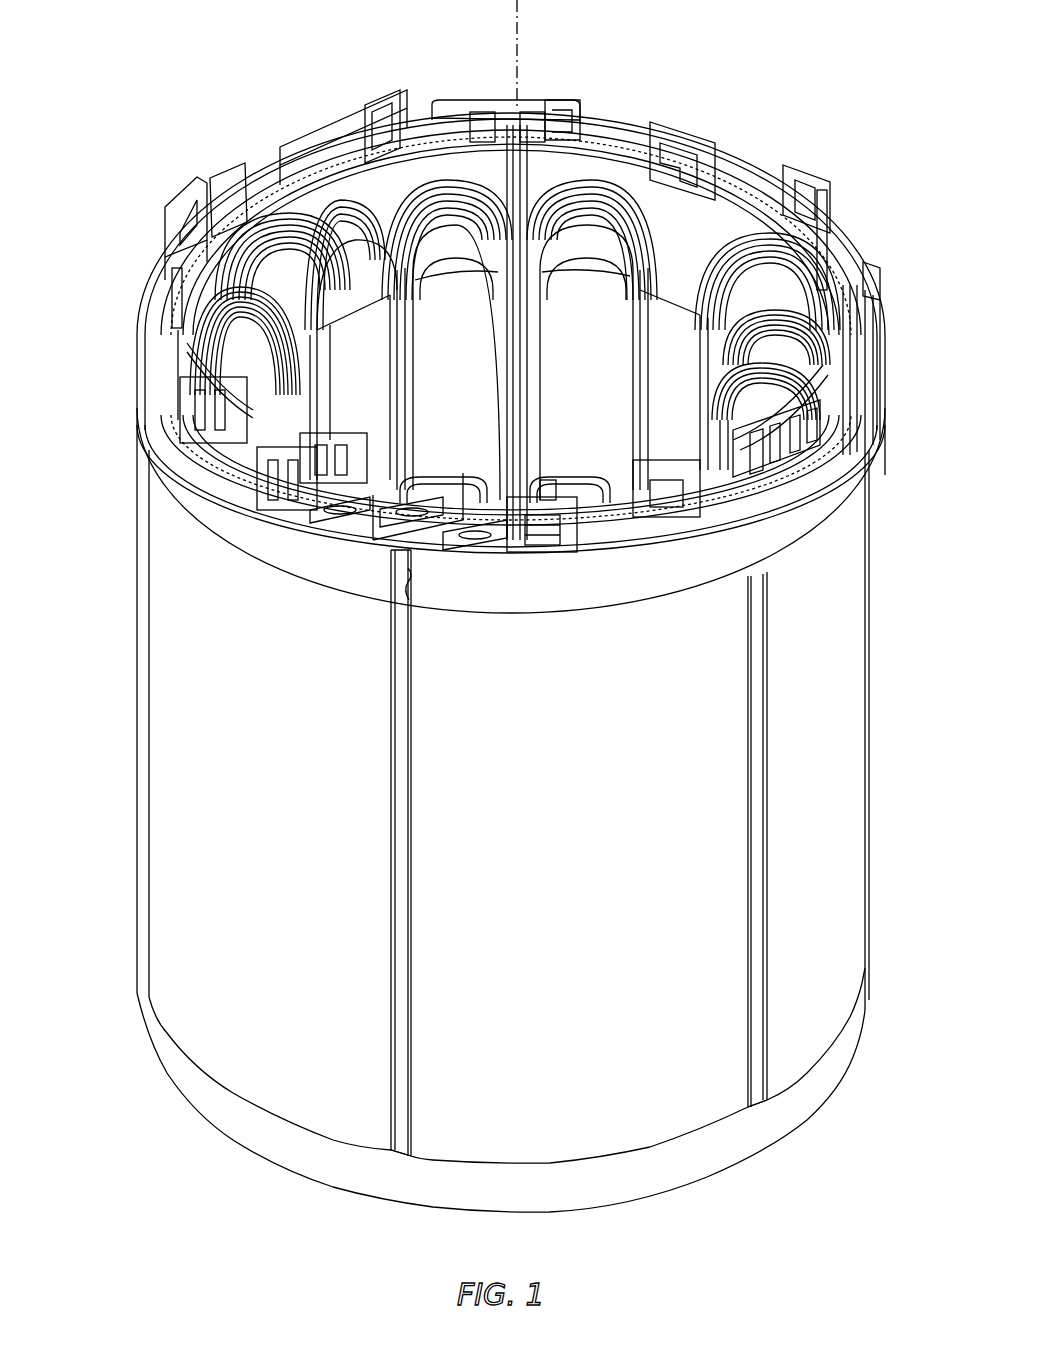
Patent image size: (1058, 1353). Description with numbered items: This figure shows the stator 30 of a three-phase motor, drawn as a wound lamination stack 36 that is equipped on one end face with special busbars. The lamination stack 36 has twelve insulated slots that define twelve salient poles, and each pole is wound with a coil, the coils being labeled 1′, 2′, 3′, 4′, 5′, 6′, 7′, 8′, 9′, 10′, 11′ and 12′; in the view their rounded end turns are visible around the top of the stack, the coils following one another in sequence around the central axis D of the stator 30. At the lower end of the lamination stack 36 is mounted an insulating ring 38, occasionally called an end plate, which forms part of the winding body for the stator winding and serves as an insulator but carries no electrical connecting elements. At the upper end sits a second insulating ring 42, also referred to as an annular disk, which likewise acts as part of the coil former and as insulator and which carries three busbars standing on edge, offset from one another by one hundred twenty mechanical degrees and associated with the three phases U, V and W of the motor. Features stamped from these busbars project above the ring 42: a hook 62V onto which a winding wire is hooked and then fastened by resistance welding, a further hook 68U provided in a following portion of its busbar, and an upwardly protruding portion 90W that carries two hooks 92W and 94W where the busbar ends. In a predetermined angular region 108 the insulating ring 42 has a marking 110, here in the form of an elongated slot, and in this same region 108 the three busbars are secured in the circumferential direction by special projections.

The stator 30 is at (513, 631).
The lamination stack 36 is at (545, 803).
The insulating ring 38 is at (787, 1112).
The insulating ring 42 is at (137, 405).
The hook 62V is at (372, 108).
The hook 68U is at (198, 210).
The upwardly protruding portion 90W is at (556, 118).
The hook 92W is at (482, 112).
The hook 94W is at (536, 112).
The angular region 108 is at (510, 726).
The marking 110 is at (411, 585).
The axis D is at (519, 48).
The U-phase terminal U is at (290, 515).
The V-phase terminal V is at (385, 525).
The W-phase terminal W is at (513, 548).
The coil 1′ is at (398, 530).
The coil 2′ is at (576, 483).
The coil 3′ is at (692, 438).
The coil 4′ is at (710, 402).
The coil 5′ is at (706, 372).
The coil 6′ is at (693, 296).
The coil 7′ is at (596, 262).
The coil 8′ is at (478, 258).
The coil 9′ is at (335, 285).
The coil 10′ is at (328, 342).
The coil 11′ is at (318, 382).
The coil 12′ is at (330, 435).